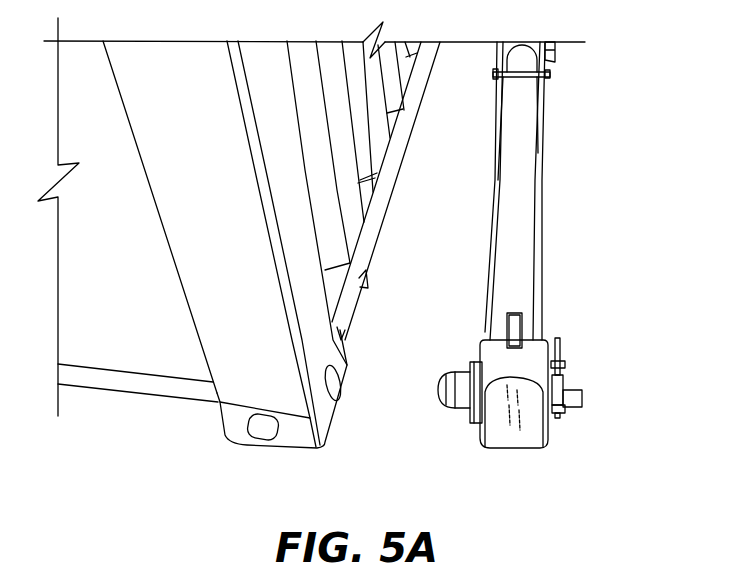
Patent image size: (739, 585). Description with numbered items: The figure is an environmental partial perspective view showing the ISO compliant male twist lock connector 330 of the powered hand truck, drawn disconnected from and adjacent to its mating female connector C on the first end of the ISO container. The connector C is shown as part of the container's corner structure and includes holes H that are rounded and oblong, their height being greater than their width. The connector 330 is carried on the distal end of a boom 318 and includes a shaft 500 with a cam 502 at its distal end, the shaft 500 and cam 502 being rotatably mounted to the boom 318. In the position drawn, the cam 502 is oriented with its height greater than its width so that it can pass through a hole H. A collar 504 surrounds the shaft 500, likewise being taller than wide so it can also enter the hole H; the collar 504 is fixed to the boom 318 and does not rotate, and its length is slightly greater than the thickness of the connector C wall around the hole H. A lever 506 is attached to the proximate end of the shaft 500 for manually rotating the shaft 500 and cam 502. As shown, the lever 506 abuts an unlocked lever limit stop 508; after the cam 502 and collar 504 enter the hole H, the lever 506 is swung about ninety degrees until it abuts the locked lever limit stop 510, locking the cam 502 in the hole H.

The boom 318 is at (542, 223).
The ISO compliant male twist lock connector 330 is at (600, 304).
The shaft 500 is at (582, 402).
The cam 502 is at (448, 373).
The collar 504 is at (465, 410).
The lever 506 is at (565, 380).
The unlocked lever limit stop 508 is at (568, 363).
The locked lever limit stop 510 is at (570, 420).
The connector C is at (134, 477).
The holes H is at (247, 455).